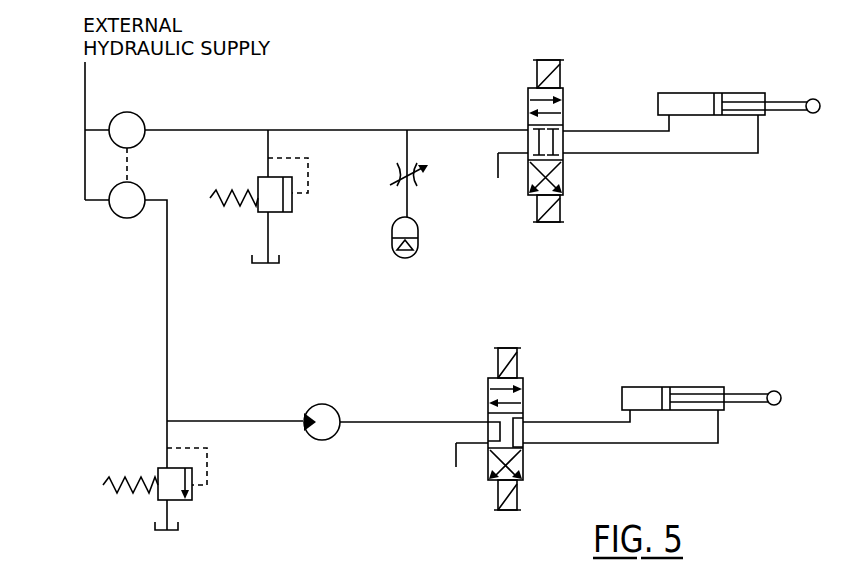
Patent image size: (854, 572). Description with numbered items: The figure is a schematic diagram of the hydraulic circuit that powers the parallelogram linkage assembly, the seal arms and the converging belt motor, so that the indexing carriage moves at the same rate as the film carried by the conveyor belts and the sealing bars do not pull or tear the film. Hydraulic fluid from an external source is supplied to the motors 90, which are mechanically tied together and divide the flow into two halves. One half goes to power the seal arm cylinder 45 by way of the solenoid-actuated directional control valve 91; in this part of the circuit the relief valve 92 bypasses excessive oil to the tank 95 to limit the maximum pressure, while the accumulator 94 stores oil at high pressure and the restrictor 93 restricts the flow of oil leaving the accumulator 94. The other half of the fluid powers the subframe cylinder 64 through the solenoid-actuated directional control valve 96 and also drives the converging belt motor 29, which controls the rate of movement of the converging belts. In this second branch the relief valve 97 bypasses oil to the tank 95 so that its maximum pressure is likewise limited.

The motors 90 is at (110, 192).
The relief valve 92 is at (278, 180).
The tank 95 is at (280, 262).
The restrictor 93 is at (410, 178).
The accumulator 94 is at (418, 242).
The solenoid-actuated directional control valve 91 is at (563, 97).
The seal arm cylinder 45 is at (728, 93).
The converging belt motor 29 is at (340, 411).
The solenoid-actuated directional control valve 96 is at (523, 384).
The subframe cylinder 64 is at (698, 387).
The relief valve 97 is at (192, 489).